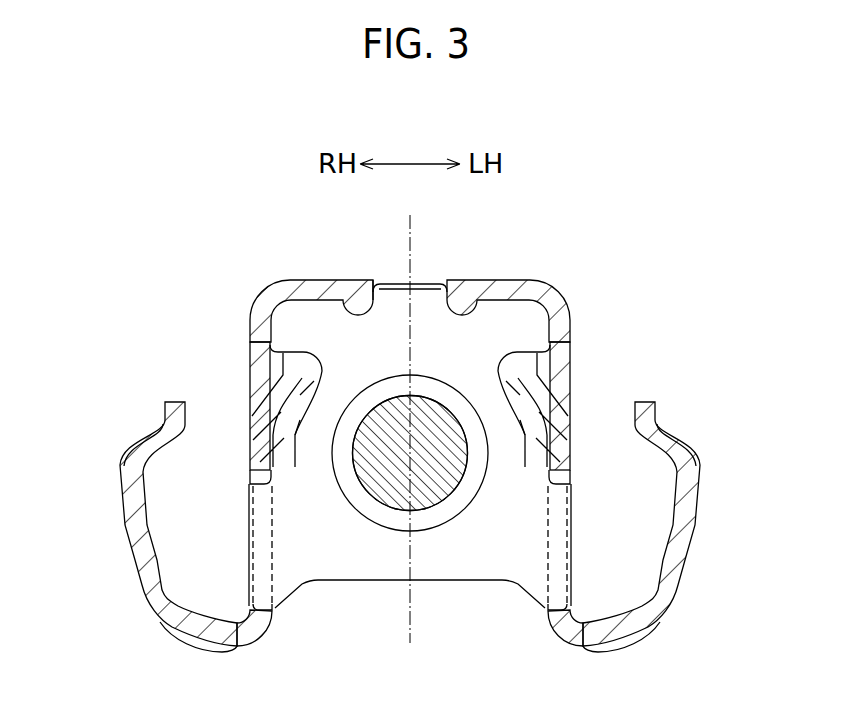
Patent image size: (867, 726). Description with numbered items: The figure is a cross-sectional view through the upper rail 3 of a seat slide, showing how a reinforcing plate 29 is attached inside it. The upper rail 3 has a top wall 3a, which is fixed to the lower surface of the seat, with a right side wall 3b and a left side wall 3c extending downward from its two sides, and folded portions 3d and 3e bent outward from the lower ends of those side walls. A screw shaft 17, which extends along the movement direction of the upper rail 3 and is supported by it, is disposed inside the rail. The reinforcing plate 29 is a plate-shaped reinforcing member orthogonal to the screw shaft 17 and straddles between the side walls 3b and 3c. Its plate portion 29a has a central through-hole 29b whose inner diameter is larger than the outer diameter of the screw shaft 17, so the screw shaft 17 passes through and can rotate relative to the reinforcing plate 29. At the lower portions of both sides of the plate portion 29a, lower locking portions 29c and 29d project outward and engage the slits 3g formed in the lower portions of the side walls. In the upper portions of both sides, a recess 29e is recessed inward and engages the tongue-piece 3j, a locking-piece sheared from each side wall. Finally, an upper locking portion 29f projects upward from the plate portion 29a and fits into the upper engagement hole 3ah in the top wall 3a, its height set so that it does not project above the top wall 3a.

The upper rail 3 is at (480, 277).
The top wall 3a is at (313, 283).
The upper engagement hole 3ah is at (387, 283).
The right side wall 3b is at (569, 330).
The left side wall 3c is at (252, 328).
The folded portion 3d is at (692, 514).
The folded portion 3e is at (128, 514).
The slit 3g is at (257, 474).
The tongue-piece 3j is at (292, 368).
The screw shaft 17 is at (445, 420).
The reinforcing plate 29 is at (354, 586).
The plate portion 29a is at (453, 583).
The through-hole 29b is at (358, 498).
The lower locking portion 29c is at (556, 560).
The lower locking portion 29d is at (262, 560).
The recess 29e is at (290, 433).
The upper locking portion 29f is at (432, 284).